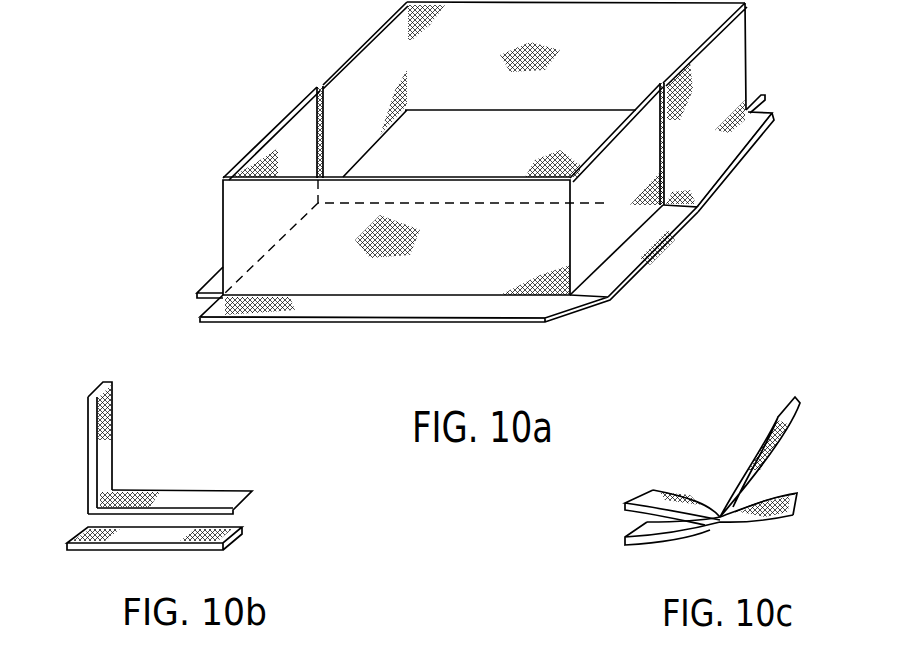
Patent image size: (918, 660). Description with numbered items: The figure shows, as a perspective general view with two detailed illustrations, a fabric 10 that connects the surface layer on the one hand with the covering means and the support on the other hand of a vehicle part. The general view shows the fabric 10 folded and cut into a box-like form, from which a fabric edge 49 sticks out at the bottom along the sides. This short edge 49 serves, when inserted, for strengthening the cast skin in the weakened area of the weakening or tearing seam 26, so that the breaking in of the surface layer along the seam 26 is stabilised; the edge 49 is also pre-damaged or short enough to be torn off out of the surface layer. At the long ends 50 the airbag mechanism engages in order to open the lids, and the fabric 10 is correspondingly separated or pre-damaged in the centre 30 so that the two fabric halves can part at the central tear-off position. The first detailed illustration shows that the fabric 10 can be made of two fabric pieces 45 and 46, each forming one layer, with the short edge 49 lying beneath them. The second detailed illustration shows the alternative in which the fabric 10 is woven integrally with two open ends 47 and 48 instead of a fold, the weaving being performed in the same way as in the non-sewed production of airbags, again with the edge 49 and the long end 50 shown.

In FIG. 10a, the fabric 10 is at (449, 196).
In FIG. 10a, the weakening or tearing seam 26 is at (205, 305).
In FIG. 10a, the centre 30 is at (605, 226).
In FIG. 10b, the fabric piece 45 is at (107, 445).
In FIG. 10b, the fabric piece 46 is at (233, 543).
In FIG. 10c, the open end 47 is at (755, 455).
In FIG. 10c, the open end 48 is at (750, 532).
In FIG. 10a, the fabric edge 49 is at (640, 243).
In FIG. 10b, the fabric edge 49 is at (79, 532).
In FIG. 10c, the fabric edge 49 is at (775, 494).
In FIG. 10a, the long end 50 is at (350, 42).
In FIG. 10b, the long end 50 is at (203, 451).
In FIG. 10c, the long end 50 is at (730, 454).